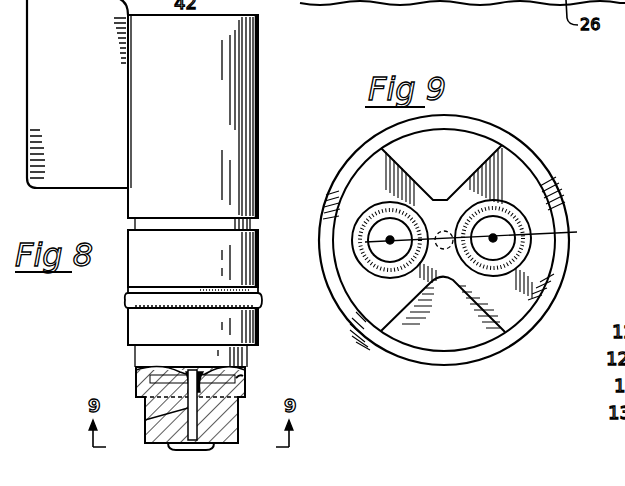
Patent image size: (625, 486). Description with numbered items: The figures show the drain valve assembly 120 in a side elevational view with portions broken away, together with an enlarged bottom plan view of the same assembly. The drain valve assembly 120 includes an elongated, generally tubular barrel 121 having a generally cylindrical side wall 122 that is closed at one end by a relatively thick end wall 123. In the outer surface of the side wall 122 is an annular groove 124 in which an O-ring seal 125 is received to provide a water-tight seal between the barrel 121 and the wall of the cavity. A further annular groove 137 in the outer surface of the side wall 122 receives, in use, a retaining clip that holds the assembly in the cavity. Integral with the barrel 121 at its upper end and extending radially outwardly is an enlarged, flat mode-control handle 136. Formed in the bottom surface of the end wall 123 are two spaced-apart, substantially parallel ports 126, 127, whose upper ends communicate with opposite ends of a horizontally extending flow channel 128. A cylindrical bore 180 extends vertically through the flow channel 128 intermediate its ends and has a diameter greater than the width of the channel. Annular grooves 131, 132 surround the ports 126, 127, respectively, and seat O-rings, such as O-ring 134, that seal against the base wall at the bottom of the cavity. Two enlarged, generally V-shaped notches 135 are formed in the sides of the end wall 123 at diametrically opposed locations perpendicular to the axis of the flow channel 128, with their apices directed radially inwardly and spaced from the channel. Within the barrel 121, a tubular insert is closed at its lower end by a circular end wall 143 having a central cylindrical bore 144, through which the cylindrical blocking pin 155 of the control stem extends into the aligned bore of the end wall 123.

In FIG. 8, the drain valve assembly 120 is at (283, 90).
In FIG. 8, the barrel 121 is at (258, 62).
In FIG. 8, the side wall 122 is at (248, 122).
In FIG. 8, the end wall 123 is at (248, 386).
In FIG. 9, the end wall 123 is at (512, 168).
In FIG. 8, the annular groove 124 is at (130, 289).
In FIG. 8, the O-ring seal 125 is at (125, 300).
In FIG. 9, the port 126 is at (489, 231).
In FIG. 8, the port 127 is at (198, 438).
In FIG. 9, the port 127 is at (390, 240).
In FIG. 9, the flow channel 128 is at (478, 296).
In FIG. 9, the annular groove 131 is at (528, 266).
In FIG. 9, the annular groove 132 is at (357, 223).
In FIG. 8, the O-ring 134 is at (182, 450).
In FIG. 9, the O-ring 134 is at (341, 173).
In FIG. 8, the V-shaped notches 135 is at (137, 400).
In FIG. 9, the V-shaped notches 135 is at (487, 160).
In FIG. 8, the mode-control handle 136 is at (93, 180).
In FIG. 8, the annular groove 137 is at (130, 223).
In FIG. 8, the end wall 143 is at (243, 375).
In FIG. 8, the cylindrical bore 144 is at (150, 418).
In FIG. 8, the blocking pin 155 is at (196, 375).
In FIG. 9, the center point 180 is at (442, 230).